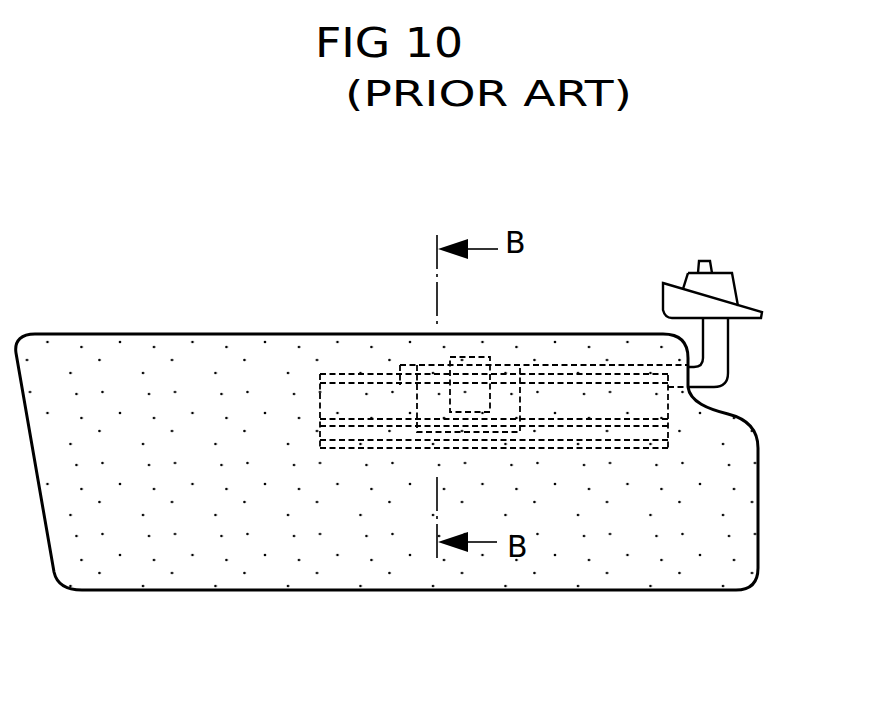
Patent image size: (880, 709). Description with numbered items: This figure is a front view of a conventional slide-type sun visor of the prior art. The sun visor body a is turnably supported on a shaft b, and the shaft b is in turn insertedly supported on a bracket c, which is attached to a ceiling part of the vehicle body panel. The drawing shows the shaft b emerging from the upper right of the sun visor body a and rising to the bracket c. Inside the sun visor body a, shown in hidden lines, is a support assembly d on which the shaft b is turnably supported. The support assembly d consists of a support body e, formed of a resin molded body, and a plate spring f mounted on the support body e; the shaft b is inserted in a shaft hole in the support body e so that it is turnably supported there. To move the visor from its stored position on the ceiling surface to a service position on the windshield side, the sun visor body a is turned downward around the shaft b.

The sun visor body a is at (116, 604).
The shaft b is at (728, 357).
The bracket c is at (752, 310).
The support assembly d is at (653, 216).
The support body e is at (520, 365).
The plate spring f is at (468, 357).